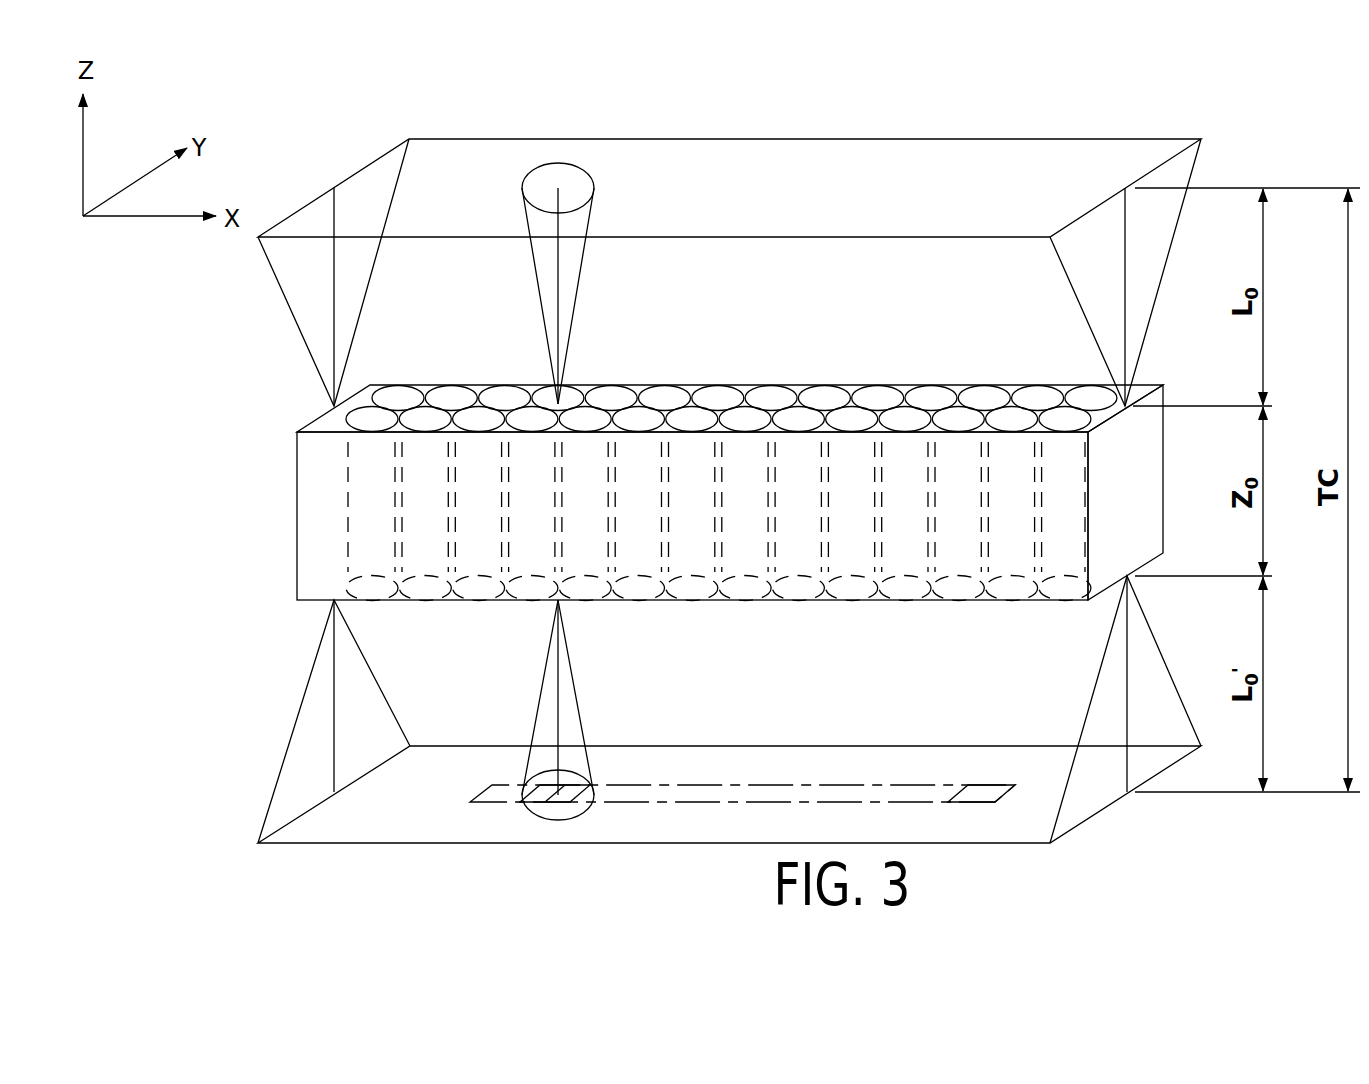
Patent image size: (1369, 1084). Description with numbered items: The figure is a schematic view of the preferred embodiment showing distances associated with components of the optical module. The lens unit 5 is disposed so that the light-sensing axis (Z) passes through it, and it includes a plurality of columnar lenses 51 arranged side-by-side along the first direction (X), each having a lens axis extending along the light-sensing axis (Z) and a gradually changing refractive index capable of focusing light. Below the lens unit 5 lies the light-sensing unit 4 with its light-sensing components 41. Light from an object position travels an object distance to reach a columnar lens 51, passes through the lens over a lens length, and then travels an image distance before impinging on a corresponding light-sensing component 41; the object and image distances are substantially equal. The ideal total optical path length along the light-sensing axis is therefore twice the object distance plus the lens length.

The lens unit 5 is at (669, 488).
The columnar lens 51 is at (372, 422).
The light-sensing unit 4 is at (699, 752).
The light-sensing component 41 is at (543, 800).